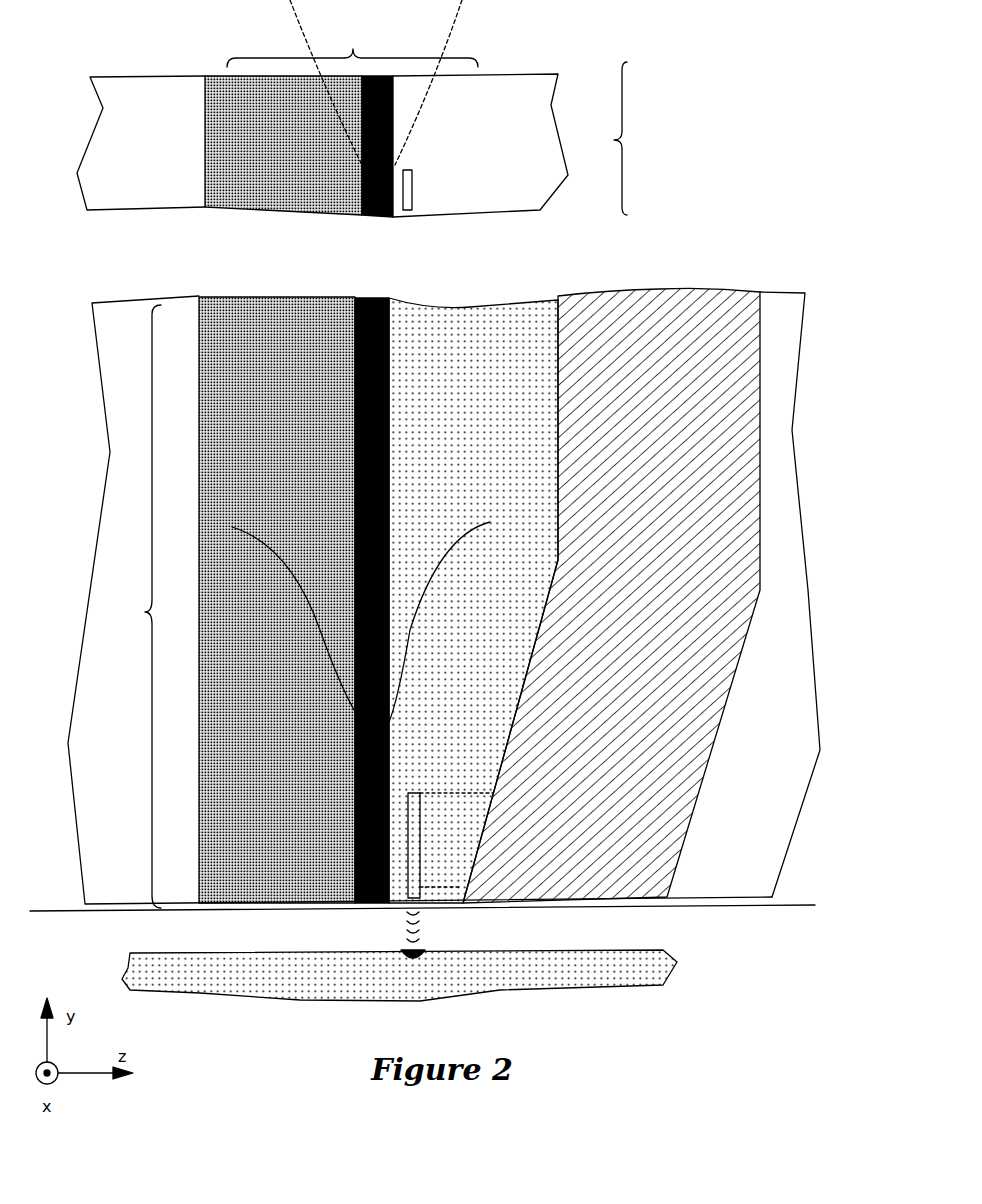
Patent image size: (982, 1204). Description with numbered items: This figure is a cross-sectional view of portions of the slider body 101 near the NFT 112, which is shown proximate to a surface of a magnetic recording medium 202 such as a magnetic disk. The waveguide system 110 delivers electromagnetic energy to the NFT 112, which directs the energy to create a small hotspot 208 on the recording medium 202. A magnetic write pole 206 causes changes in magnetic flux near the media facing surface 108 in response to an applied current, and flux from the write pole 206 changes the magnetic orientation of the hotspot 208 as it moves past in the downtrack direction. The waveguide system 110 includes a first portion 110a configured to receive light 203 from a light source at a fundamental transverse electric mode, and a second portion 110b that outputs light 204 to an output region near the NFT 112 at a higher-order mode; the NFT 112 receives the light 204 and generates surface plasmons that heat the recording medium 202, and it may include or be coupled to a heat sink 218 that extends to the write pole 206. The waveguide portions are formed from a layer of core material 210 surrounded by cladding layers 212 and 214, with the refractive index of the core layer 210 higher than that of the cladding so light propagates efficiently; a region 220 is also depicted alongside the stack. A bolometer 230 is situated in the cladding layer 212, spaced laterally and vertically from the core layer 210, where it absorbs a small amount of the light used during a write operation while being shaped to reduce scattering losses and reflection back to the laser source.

The slider body 101 is at (770, 63).
The waveguide system 110 is at (352, 40).
The first portion 110a is at (376, 138).
The second portion 110b is at (127, 606).
The light 203 is at (343, 110).
The cladding layer 214 is at (237, 207).
The core layer 210 is at (372, 215).
The cladding layer 212 is at (506, 209).
The bolometer 230 is at (412, 192).
The side region 220 is at (137, 875).
The magnetic write pole 206 is at (680, 296).
The light 204 is at (338, 686).
The NFT 112 is at (411, 882).
The heat sink 218 is at (450, 870).
The media facing surface 108 is at (717, 907).
The magnetic recording medium 202 is at (183, 975).
The hotspot 208 is at (412, 962).